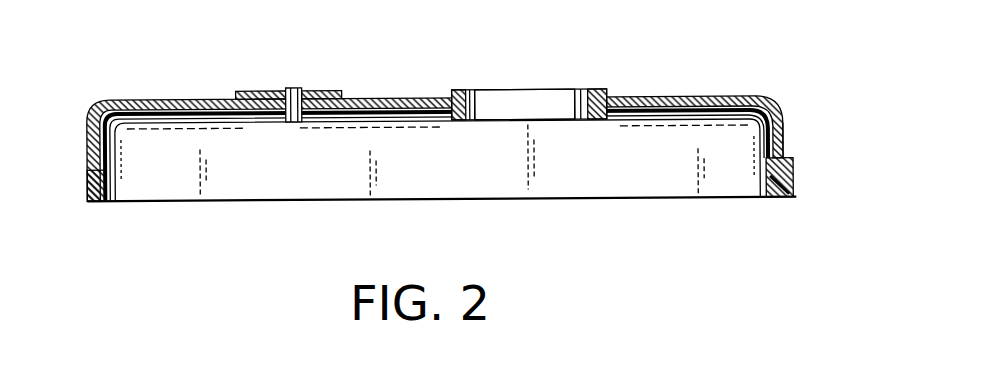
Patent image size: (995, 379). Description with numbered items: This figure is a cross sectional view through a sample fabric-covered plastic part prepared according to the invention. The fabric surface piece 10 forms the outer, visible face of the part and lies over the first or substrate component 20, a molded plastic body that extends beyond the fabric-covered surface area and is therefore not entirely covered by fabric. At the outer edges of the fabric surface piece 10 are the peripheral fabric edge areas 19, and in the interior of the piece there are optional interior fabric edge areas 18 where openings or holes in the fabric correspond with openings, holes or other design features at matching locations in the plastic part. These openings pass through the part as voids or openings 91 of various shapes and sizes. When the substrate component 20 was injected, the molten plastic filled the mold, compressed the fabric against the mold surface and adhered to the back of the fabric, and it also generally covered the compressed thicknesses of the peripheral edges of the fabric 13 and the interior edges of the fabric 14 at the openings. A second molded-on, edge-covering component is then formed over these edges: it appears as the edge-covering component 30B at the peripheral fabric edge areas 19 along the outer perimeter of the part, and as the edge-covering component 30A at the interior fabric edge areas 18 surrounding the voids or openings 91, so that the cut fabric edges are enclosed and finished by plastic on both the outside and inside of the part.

The fabric surface piece 10 is at (165, 100).
The peripheral edges of the fabric 13 is at (780, 196).
The interior edges of the fabric 14 is at (485, 103).
The interior fabric edge areas 18 is at (224, 100).
The peripheral fabric edge areas 19 is at (786, 142).
The first or substrate component 20 is at (236, 124).
The second molded-on edge-covering component at interior edge areas 30A is at (330, 91).
The second molded-on edge-covering component at peripheral edge areas 30B is at (97, 174).
The voids or openings in the part 91 is at (293, 122).